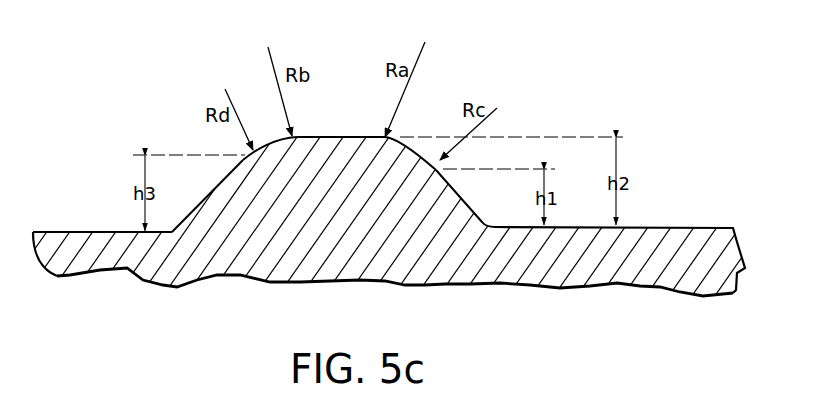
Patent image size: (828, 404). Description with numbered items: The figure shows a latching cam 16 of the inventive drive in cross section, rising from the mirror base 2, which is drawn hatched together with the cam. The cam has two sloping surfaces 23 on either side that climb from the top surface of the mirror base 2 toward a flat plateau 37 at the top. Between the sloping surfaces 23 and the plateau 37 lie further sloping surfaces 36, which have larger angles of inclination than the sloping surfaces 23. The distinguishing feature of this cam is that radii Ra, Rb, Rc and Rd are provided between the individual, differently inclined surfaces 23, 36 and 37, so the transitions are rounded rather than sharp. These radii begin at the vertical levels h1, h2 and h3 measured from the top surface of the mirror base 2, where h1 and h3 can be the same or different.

The mirror base 2 is at (673, 228).
The latching cam 16 is at (383, 267).
The sloping surfaces 23 is at (205, 195).
The sloping surfaces 36 is at (277, 145).
The plateau 37 is at (338, 137).